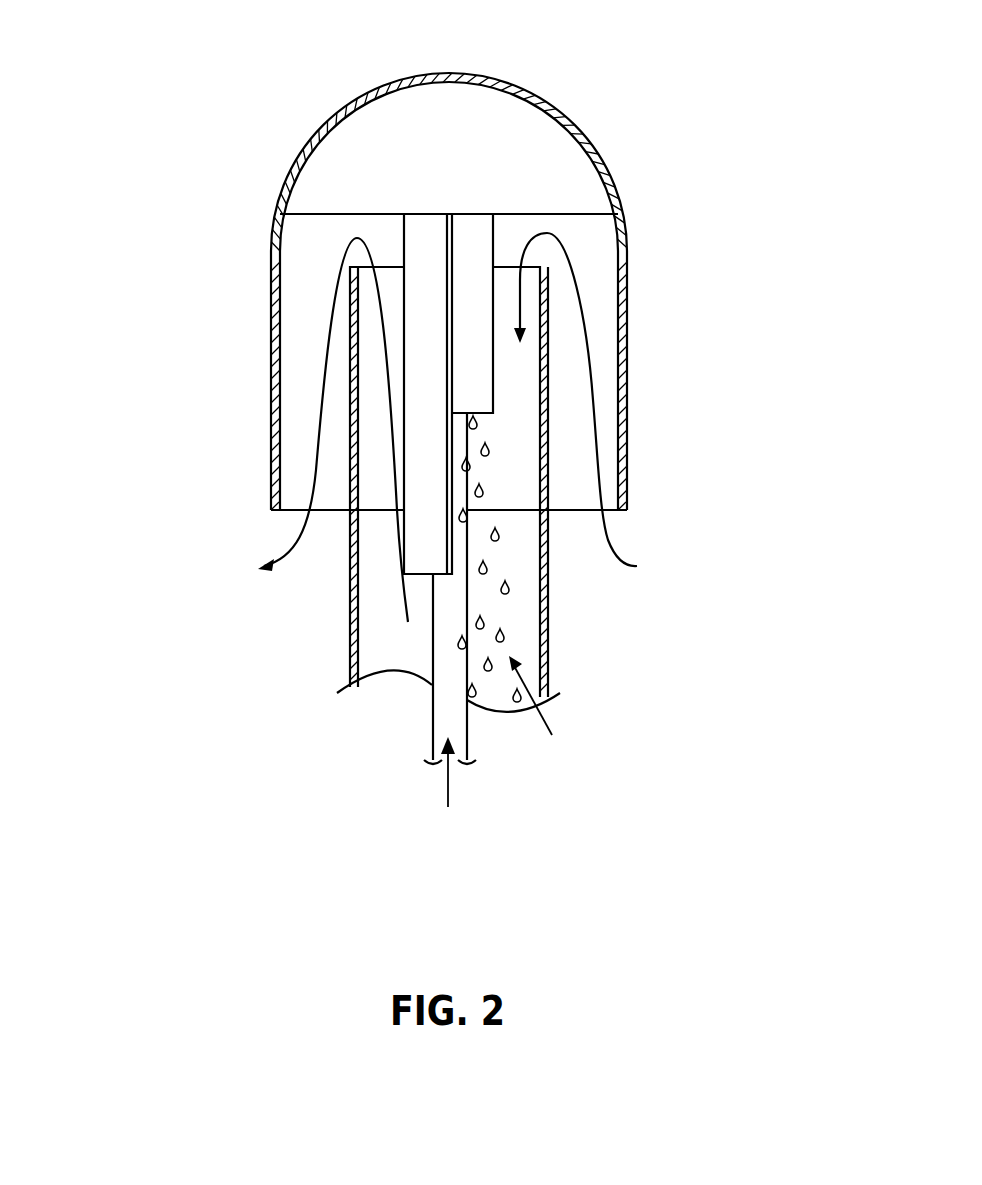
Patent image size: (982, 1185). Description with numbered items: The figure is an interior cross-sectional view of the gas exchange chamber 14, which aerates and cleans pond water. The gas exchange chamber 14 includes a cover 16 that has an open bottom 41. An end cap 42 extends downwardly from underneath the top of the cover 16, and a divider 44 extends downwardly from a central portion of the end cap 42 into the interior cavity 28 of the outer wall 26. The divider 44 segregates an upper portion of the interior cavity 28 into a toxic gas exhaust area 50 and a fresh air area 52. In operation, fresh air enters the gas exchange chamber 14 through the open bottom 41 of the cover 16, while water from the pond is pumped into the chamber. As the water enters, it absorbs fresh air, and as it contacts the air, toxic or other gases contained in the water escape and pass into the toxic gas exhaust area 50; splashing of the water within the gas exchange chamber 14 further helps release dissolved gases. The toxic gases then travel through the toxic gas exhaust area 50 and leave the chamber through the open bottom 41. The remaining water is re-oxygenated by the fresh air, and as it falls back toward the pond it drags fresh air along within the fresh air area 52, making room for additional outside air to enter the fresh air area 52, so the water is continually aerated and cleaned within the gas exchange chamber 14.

The gas exchange chamber 14 is at (230, 58).
The cover 16 is at (628, 300).
The end cap 42 is at (555, 143).
The open bottom 41 is at (274, 484).
The divider 44 is at (445, 222).
The outer wall 26 is at (348, 668).
The toxic gas exhaust area 50 is at (387, 575).
The fresh air area 52 is at (527, 587).
The interior cavity 28 is at (420, 644).